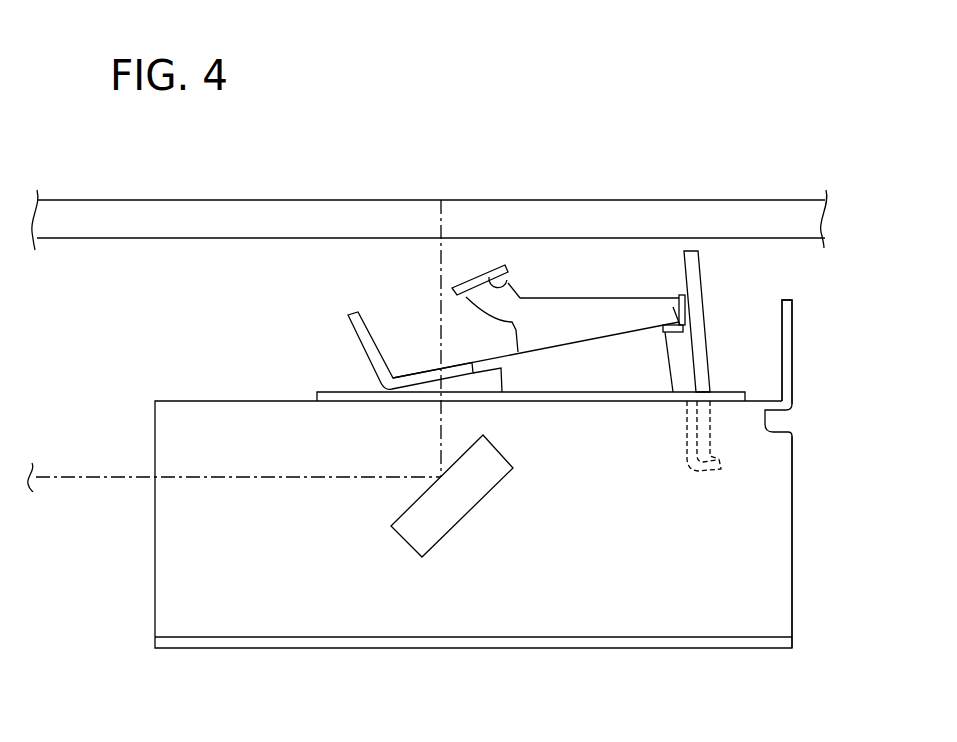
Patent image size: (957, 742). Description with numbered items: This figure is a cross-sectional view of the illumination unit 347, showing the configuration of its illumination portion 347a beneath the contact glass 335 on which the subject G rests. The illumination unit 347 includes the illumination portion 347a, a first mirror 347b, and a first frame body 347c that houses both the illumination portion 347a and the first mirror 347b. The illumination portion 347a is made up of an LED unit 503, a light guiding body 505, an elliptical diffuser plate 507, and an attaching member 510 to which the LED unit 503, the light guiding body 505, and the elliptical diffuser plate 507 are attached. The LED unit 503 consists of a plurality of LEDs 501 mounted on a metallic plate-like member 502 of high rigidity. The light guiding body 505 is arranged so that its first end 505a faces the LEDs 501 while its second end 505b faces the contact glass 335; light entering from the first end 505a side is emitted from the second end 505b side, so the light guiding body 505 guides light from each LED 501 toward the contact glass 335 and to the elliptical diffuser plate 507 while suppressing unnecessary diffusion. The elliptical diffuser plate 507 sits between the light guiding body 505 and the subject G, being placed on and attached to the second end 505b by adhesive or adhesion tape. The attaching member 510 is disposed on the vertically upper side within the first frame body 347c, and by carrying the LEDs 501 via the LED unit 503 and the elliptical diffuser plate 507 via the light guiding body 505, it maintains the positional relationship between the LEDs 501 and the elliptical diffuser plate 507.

The contact glass 335 is at (763, 210).
The subject G is at (443, 180).
The illumination unit 347 is at (833, 312).
The illumination portion 347a is at (733, 307).
The first mirror 347b is at (447, 535).
The first frame body 347c is at (783, 610).
The attaching member 510 is at (356, 335).
The light guiding body 505 is at (592, 297).
The first end 505a is at (673, 307).
The second end 505b is at (508, 283).
The elliptical diffuser plate 507 is at (495, 266).
The LEDs 501 is at (678, 295).
The metallic plate-like member 502 is at (708, 340).
The LED unit 503 is at (716, 263).